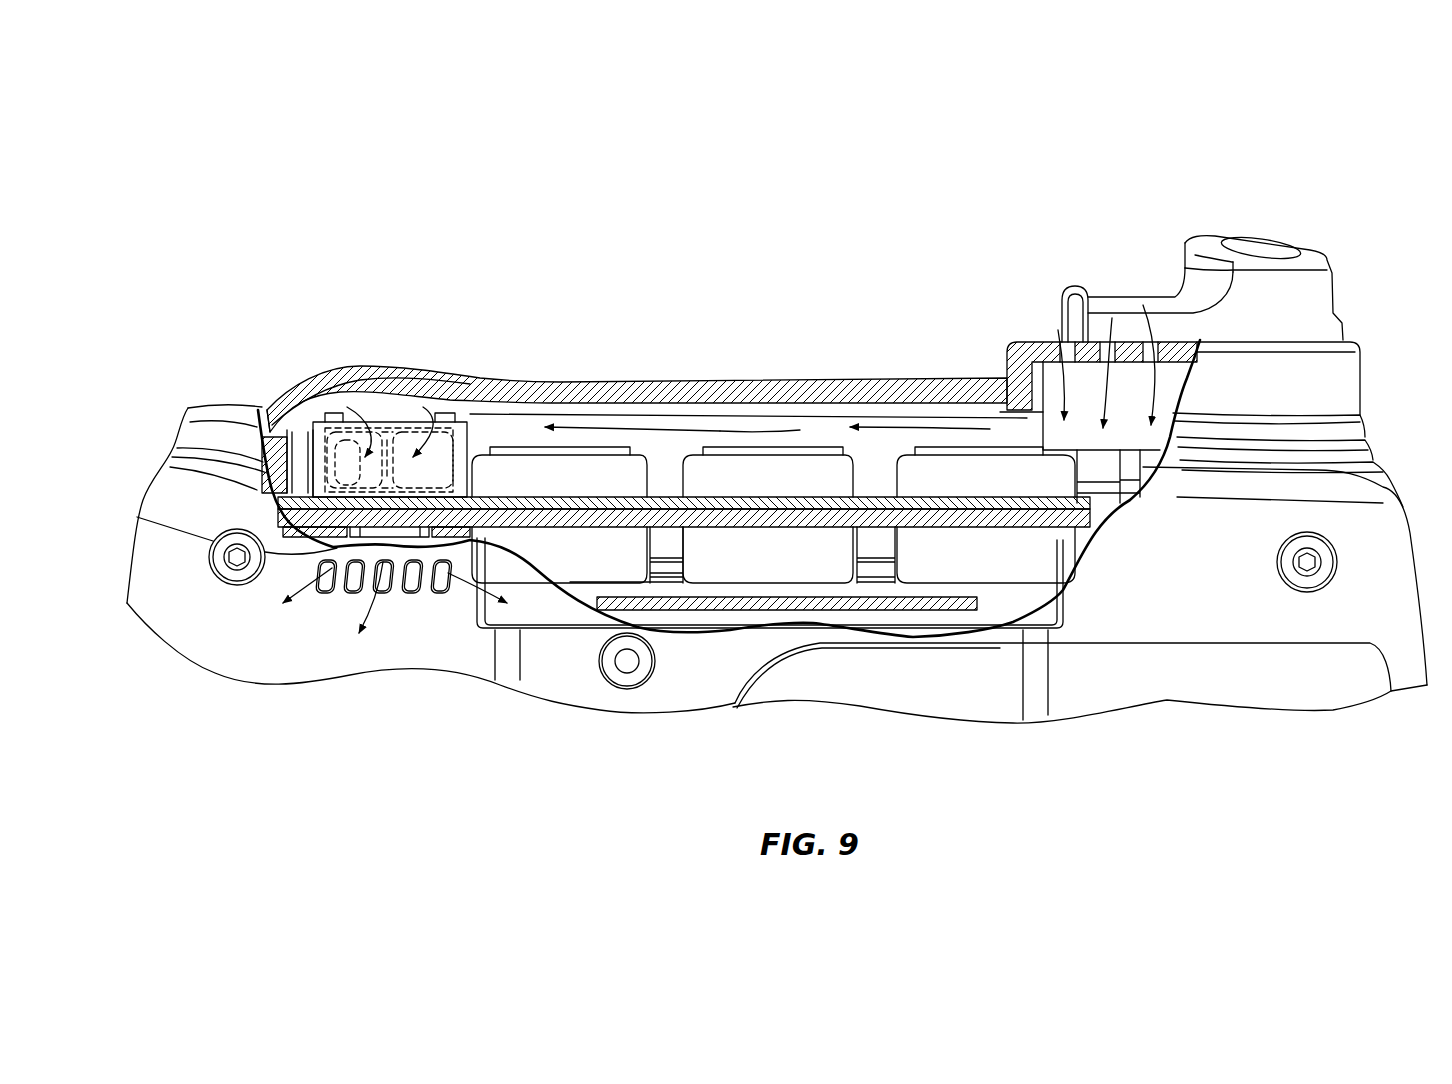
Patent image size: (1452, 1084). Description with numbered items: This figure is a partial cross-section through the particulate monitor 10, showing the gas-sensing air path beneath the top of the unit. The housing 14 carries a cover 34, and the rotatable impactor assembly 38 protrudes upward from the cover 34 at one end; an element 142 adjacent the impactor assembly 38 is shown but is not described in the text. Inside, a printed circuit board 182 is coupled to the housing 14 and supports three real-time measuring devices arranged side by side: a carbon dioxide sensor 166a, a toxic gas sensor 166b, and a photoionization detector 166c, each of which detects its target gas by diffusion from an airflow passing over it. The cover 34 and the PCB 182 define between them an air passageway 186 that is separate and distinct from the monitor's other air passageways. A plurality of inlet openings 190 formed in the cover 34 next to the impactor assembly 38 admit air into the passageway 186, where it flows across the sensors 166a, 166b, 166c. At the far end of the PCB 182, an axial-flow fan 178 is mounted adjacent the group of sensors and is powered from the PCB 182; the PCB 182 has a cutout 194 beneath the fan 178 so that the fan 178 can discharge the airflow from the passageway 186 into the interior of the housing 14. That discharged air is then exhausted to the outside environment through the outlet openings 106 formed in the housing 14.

The monitor 10 is at (676, 214).
The housing 14 is at (170, 626).
The cover 34 is at (620, 385).
The rotatable impactor assembly 38 is at (1360, 238).
The outlet openings 106 is at (441, 593).
The outlet cap 142 is at (1330, 317).
The carbon dioxide sensor 166a is at (960, 568).
The toxic gas sensor 166b is at (770, 563).
The photoionization detector 166c is at (585, 558).
The axial-flow fan 178 is at (405, 373).
The printed circuit board 182 is at (815, 493).
The air passageway 186 is at (765, 437).
The inlet openings 190 is at (1040, 347).
The cutout 194 is at (293, 383).